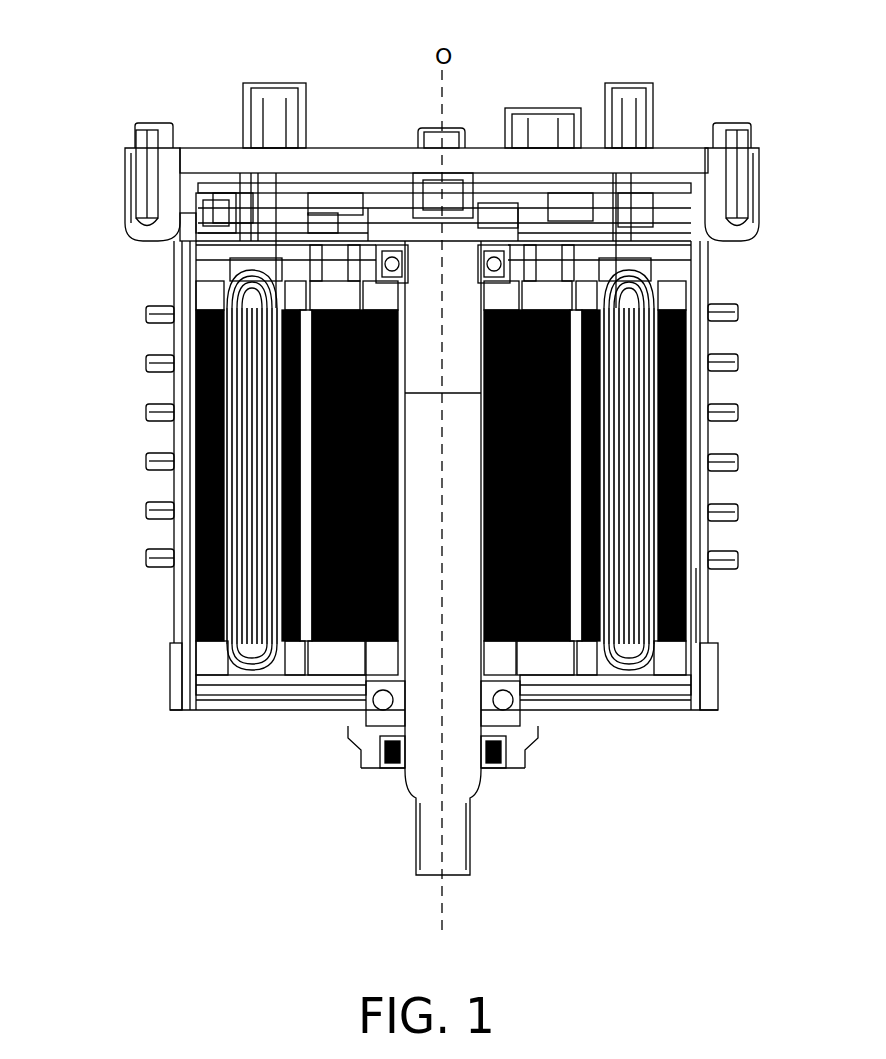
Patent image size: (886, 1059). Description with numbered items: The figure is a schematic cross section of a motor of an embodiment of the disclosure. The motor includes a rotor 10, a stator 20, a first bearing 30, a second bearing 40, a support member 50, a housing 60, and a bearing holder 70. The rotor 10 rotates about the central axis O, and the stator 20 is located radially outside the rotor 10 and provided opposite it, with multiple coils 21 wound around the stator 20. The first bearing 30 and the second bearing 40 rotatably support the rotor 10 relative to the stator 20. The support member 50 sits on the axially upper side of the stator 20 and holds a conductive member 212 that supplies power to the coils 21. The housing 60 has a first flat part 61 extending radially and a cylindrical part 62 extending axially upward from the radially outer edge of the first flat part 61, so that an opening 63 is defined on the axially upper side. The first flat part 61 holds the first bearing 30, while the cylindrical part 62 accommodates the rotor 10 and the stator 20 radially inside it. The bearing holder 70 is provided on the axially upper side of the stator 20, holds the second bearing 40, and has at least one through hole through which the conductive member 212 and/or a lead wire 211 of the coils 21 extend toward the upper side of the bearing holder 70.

The rotor 10 is at (318, 640).
The stator 20 is at (192, 640).
The coils 21 is at (230, 560).
The lead wire 211 is at (235, 260).
The conductive member 212 is at (275, 195).
The first bearing 30 is at (372, 700).
The second bearing 40 is at (378, 198).
The support member 50 is at (200, 195).
The housing 60 is at (690, 325).
The first flat part 61 is at (612, 695).
The cylindrical part 62 is at (690, 602).
The opening 63 is at (665, 128).
The bearing holder 70 is at (170, 213).